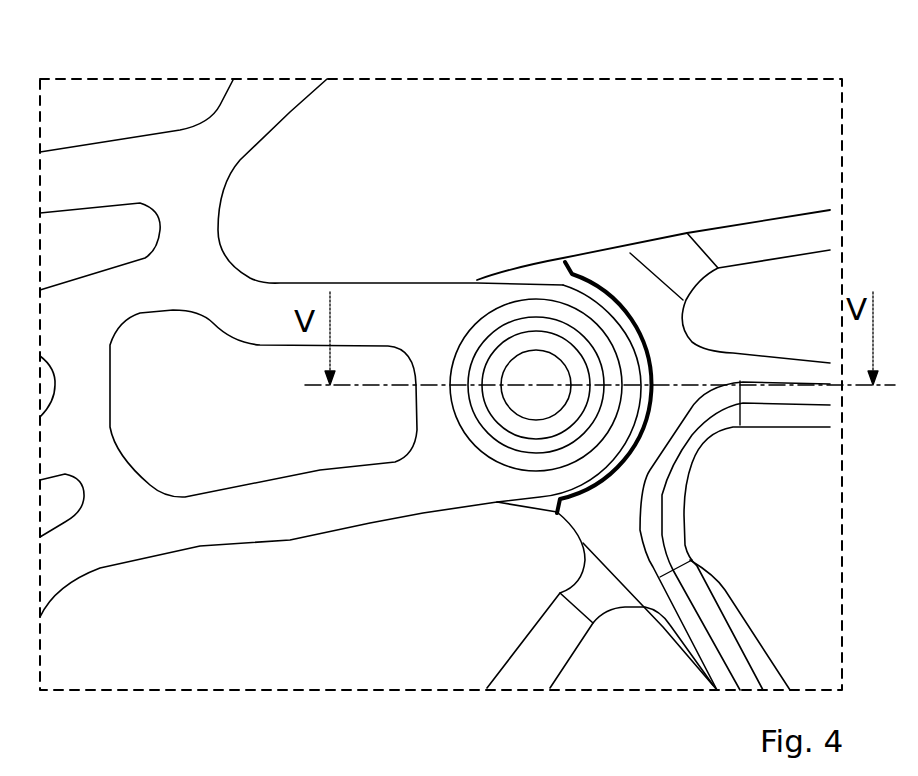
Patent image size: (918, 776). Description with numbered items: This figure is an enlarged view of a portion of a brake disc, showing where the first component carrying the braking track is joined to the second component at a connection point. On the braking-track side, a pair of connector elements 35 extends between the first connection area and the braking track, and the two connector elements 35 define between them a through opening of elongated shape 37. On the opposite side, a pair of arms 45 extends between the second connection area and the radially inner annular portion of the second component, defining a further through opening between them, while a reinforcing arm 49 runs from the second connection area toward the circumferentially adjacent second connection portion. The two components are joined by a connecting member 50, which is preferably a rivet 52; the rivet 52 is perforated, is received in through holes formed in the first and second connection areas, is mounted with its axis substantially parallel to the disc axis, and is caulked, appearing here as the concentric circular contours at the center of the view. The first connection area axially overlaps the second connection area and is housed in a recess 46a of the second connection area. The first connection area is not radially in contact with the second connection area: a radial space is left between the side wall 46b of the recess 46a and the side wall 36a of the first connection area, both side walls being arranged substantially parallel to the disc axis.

The connector elements 35 is at (370, 526).
The side wall of the first connection area 36a is at (613, 313).
The through opening of elongated shape 37 is at (257, 465).
The arms 45 is at (725, 657).
The recess 46a is at (550, 278).
The side wall of the recess 46b is at (603, 283).
The reinforcing arm 49 is at (755, 242).
The connecting member 50 is at (607, 425).
The rivet 52 is at (533, 443).